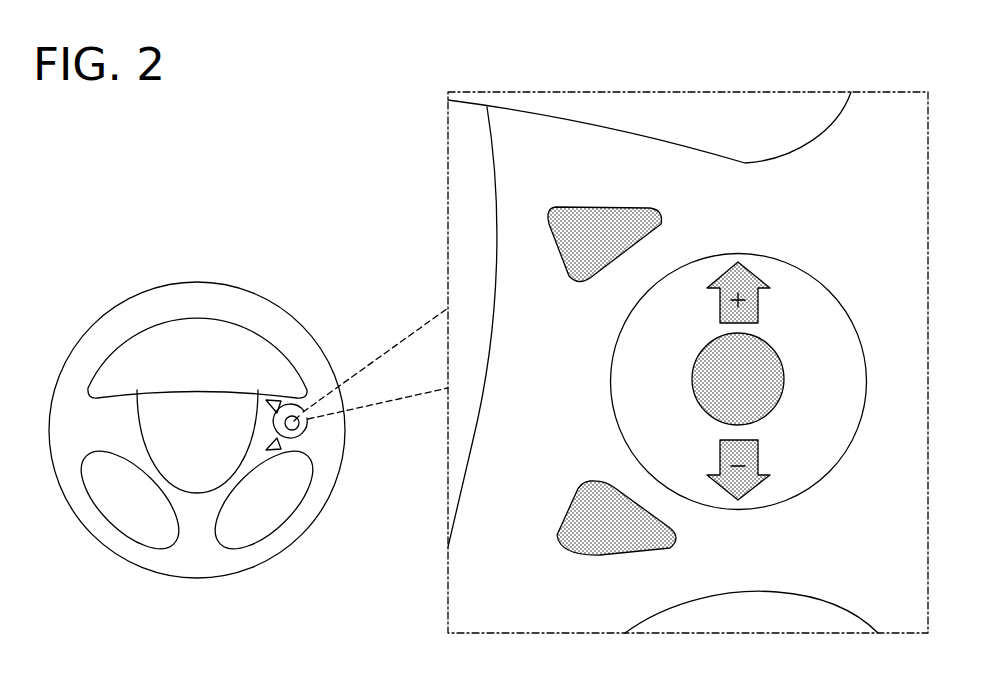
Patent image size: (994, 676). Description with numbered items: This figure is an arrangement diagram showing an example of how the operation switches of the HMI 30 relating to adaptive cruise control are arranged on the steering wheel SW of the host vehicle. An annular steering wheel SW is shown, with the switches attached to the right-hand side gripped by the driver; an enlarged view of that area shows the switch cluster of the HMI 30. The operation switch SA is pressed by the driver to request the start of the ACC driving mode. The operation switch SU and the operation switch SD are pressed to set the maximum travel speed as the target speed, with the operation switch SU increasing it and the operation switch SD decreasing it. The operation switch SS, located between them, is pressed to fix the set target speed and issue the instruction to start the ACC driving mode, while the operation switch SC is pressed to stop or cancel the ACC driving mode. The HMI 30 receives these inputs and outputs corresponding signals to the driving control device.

The steering wheel SW is at (197, 283).
The HMI 30 is at (447, 135).
The operation switch SA is at (597, 207).
The operation switch SU is at (753, 272).
The operation switch SS is at (786, 381).
The operation switch SD is at (757, 486).
The operation switch SC is at (567, 510).